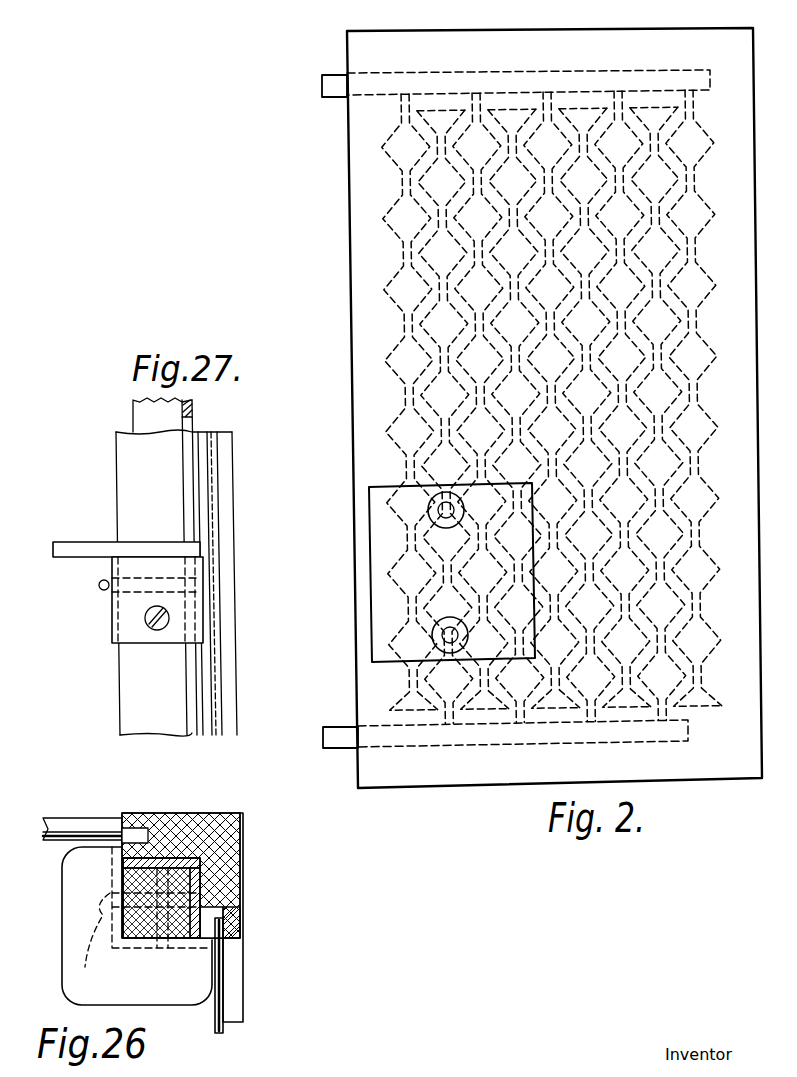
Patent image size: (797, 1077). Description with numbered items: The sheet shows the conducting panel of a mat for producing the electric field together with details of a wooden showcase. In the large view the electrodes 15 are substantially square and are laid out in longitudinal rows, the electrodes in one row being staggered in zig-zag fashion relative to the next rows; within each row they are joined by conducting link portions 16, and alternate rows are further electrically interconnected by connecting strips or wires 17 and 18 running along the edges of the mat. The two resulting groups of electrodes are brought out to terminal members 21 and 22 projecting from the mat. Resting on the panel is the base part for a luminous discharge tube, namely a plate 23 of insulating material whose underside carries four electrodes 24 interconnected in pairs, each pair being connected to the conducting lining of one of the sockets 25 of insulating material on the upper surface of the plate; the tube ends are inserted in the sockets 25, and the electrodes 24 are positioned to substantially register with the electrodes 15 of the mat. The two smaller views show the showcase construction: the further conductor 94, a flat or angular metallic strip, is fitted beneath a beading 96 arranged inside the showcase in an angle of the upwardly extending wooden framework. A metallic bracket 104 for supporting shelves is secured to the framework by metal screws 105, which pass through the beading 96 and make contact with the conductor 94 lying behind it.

In FIG. 2, the electrodes 15 is at (513, 408).
In FIG. 2, the conducting link portions 16 is at (440, 287).
In FIG. 2, the connecting strips or wires 17 is at (445, 748).
In FIG. 2, the connecting strips or wires 18 is at (365, 97).
In FIG. 2, the terminal member 21 is at (345, 726).
In FIG. 2, the terminal member 22 is at (321, 87).
In FIG. 2, the plate 23 is at (517, 484).
In FIG. 2, the electrodes 24 is at (387, 565).
In FIG. 2, the sockets 25 is at (432, 500).
In FIG. 27, the further conductor 94 is at (133, 418).
In FIG. 26, the further conductor 94 is at (222, 847).
In FIG. 27, the beading 96 is at (116, 480).
In FIG. 26, the beading 96 is at (223, 871).
In FIG. 27, the metallic bracket 104 is at (80, 543).
In FIG. 26, the metallic bracket 104 is at (145, 997).
In FIG. 27, the metal screws 105 is at (104, 590).
In FIG. 26, the metal screws 105 is at (165, 960).